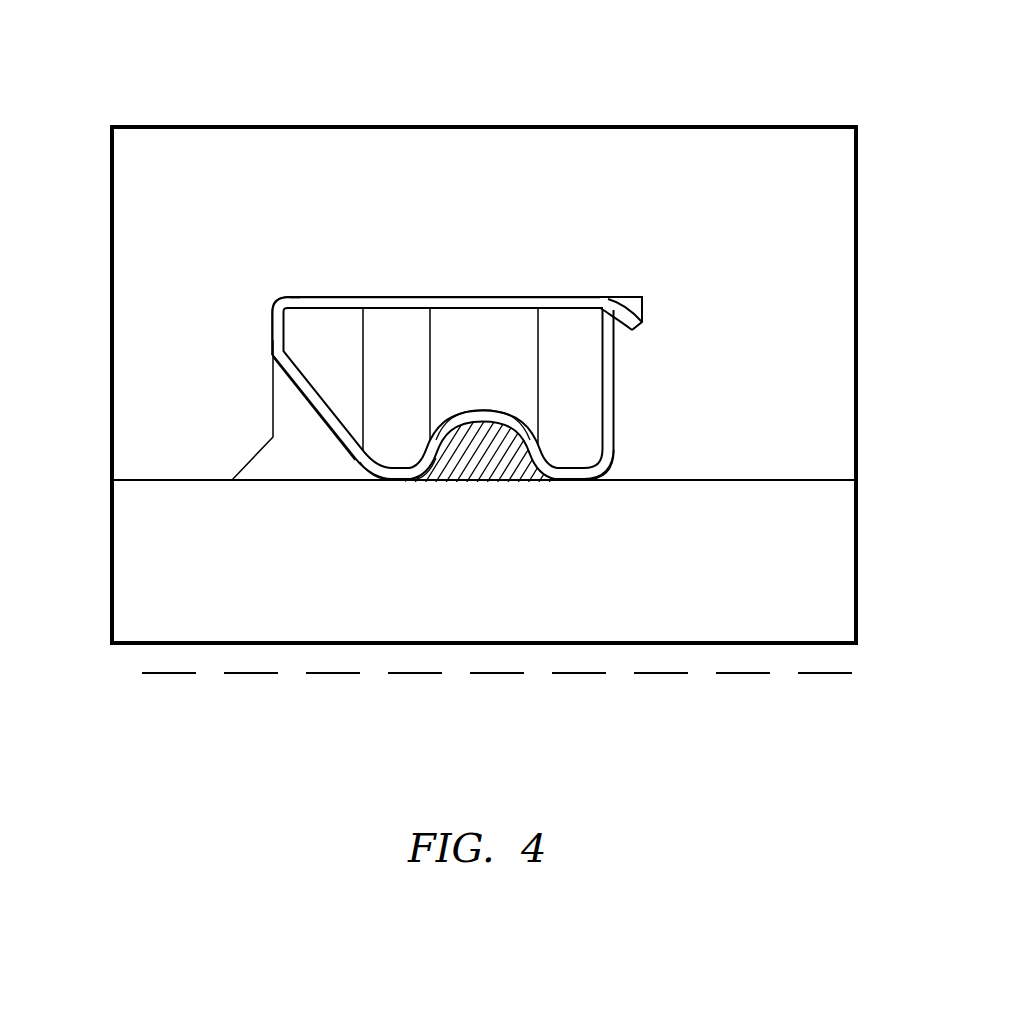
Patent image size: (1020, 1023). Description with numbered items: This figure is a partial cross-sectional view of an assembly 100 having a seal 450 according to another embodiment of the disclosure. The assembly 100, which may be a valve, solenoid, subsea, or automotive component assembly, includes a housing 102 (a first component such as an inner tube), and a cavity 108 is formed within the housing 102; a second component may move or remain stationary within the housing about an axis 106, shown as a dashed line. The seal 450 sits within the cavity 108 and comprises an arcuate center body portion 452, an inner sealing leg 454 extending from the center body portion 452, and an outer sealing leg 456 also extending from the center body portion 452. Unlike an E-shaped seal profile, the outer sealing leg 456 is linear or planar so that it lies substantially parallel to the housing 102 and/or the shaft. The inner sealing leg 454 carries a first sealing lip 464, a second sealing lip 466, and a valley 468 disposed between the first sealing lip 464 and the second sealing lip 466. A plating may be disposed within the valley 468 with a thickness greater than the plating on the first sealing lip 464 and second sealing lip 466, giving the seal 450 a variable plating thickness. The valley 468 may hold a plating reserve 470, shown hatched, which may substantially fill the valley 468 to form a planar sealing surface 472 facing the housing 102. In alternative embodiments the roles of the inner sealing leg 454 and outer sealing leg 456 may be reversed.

The assembly 100 is at (786, 50).
The first component 102 is at (595, 126).
The axis 106 is at (745, 673).
The cavity 108 is at (757, 379).
The seal 450 is at (618, 416).
The center body portion 452 is at (273, 345).
The inner sealing leg 454 is at (296, 411).
The outer sealing leg 456 is at (453, 297).
The first sealing lip 464 is at (578, 481).
The second sealing lip 466 is at (388, 481).
The valley 468 is at (493, 481).
The plating reserve 470 is at (453, 481).
The planar sealing surface 472 is at (470, 481).